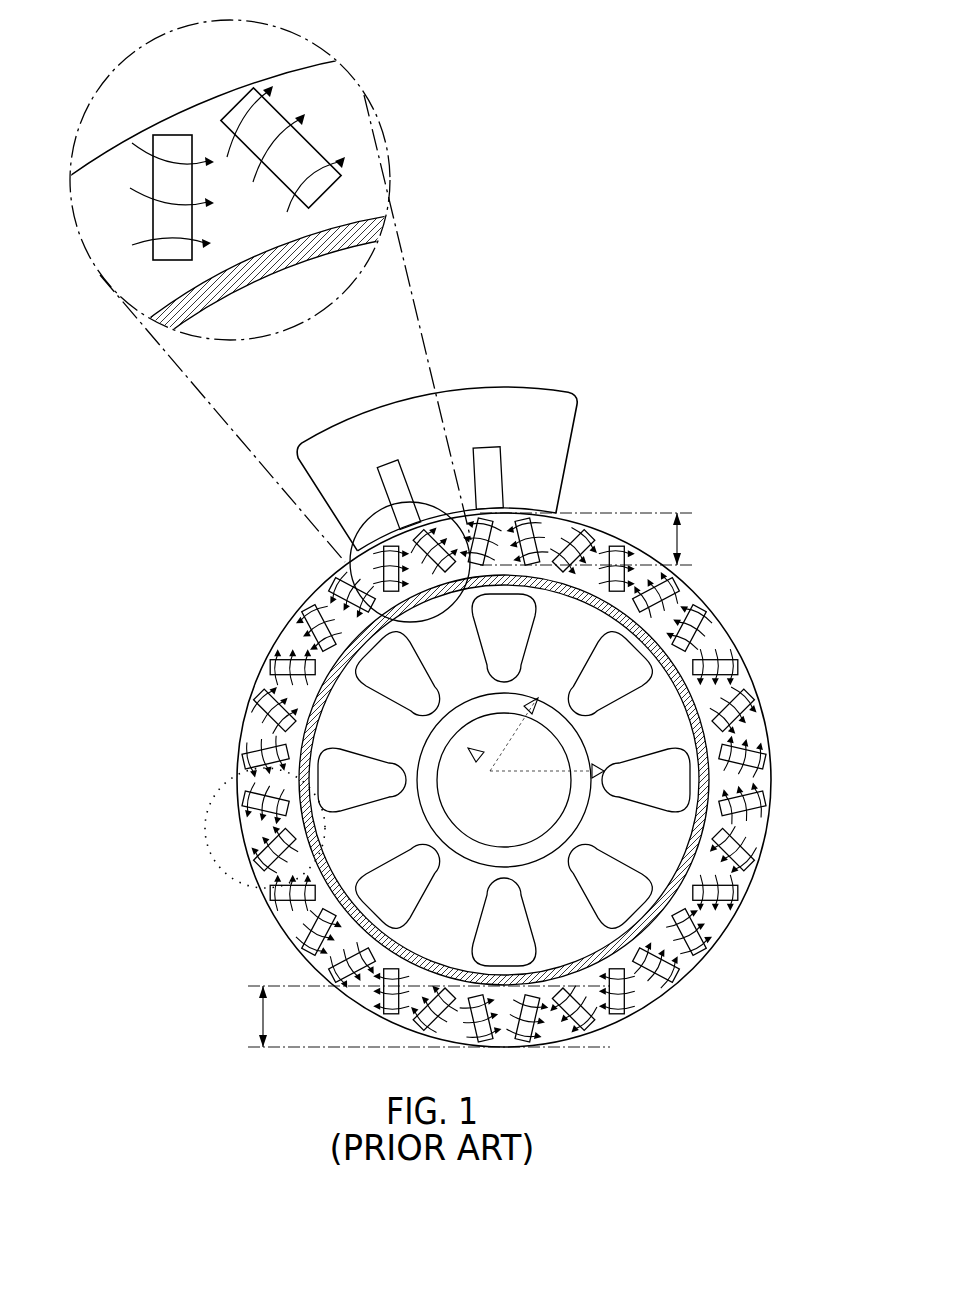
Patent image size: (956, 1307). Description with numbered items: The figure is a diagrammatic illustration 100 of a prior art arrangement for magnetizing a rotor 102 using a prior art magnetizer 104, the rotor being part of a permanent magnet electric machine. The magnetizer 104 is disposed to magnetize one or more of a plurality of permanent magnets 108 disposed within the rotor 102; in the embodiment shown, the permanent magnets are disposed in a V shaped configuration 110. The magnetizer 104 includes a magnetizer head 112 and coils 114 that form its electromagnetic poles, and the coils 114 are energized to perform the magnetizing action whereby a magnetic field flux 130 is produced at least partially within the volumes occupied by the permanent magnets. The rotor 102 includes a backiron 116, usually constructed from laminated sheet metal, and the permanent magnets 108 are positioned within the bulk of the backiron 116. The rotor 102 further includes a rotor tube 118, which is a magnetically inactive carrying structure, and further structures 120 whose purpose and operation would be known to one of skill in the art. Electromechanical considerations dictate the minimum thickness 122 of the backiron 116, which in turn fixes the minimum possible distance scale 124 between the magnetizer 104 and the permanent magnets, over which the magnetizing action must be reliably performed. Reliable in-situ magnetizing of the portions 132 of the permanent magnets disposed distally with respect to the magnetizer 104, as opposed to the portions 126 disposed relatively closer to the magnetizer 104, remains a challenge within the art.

The diagrammatic illustration 100 is at (671, 81).
The rotor 102 is at (717, 967).
The magnetizer 104 is at (586, 409).
The permanent magnets 108 is at (711, 628).
The V shaped configuration 110 is at (205, 833).
The magnetizer head 112 is at (513, 392).
The coils 114 is at (485, 457).
The backiron 116 is at (252, 728).
The rotor tube 118 is at (674, 698).
The further structures 120 is at (529, 744).
The thickness of the rotor backiron 122 is at (260, 1018).
The distance scale 124 is at (681, 543).
The portions of the permanent magnets closer to the magnetizer 126 is at (262, 110).
The magnetic field flux 130 is at (290, 208).
The distally disposed portions of the permanent magnets 132 is at (317, 189).